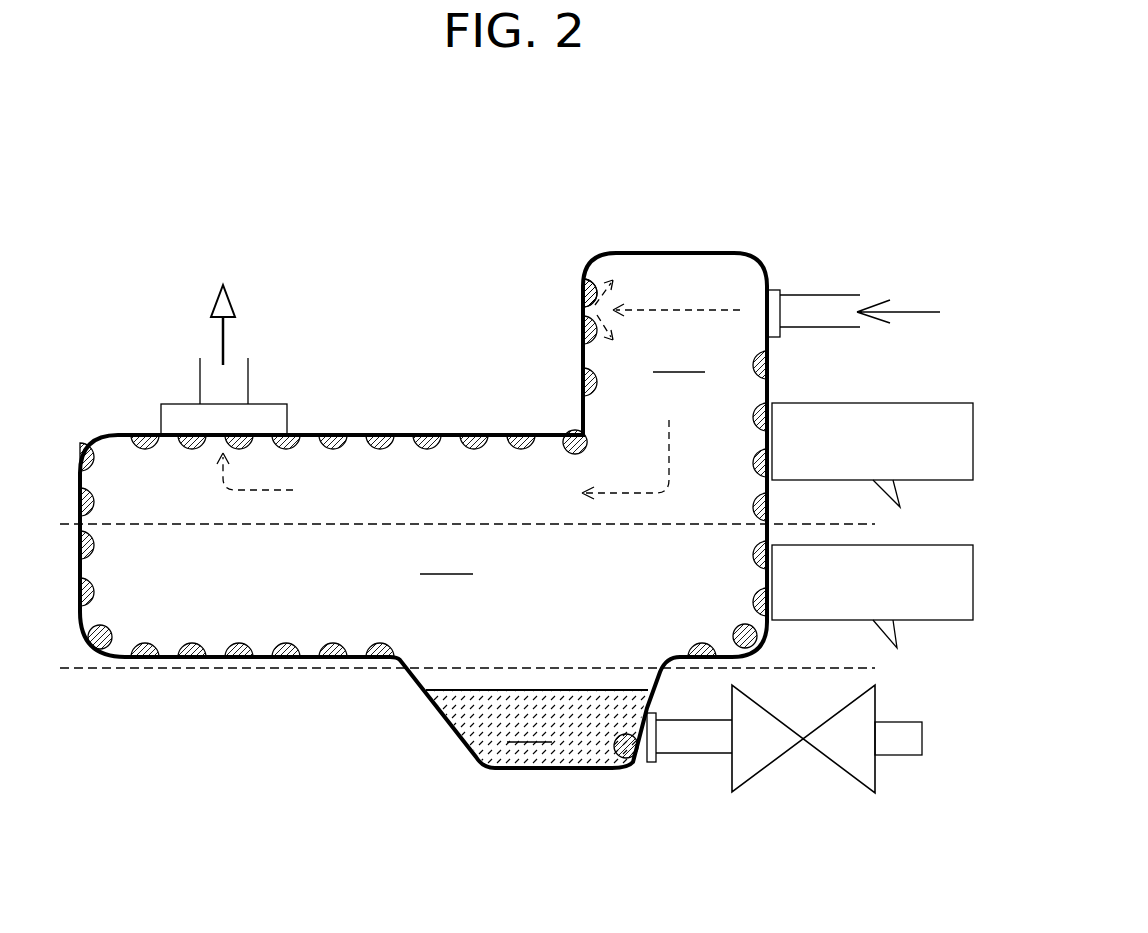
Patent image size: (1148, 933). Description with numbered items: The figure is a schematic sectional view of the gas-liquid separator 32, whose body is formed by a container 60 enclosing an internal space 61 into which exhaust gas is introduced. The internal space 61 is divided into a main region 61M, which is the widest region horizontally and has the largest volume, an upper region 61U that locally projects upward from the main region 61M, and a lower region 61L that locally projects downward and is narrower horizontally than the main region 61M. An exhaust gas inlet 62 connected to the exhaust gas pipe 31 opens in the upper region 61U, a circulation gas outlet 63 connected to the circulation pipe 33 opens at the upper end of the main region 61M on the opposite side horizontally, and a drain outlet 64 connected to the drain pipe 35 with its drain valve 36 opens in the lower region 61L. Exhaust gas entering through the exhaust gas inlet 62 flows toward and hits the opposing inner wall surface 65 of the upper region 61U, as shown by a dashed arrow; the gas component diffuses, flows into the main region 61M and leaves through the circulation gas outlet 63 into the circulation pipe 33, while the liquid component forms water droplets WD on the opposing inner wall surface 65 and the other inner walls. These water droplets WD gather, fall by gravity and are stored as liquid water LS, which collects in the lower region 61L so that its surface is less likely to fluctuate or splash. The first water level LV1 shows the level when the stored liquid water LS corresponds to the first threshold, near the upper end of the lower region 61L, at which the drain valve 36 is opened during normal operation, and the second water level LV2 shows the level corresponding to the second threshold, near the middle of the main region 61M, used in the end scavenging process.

The exhaust gas pipe 31 is at (800, 293).
The gas-liquid separator 32 is at (408, 310).
The circulation pipe 33 is at (248, 380).
The drain pipe 35 is at (687, 755).
The drain valve 36 is at (772, 764).
The container 60 is at (662, 253).
The internal space 61 is at (590, 459).
The upper region 61U is at (679, 358).
The main region 61M is at (446, 560).
The lower region 61L is at (529, 728).
The exhaust gas inlet 62 is at (763, 307).
The circulation gas outlet 63 is at (213, 443).
The drain outlet 64 is at (627, 742).
The opposing inner wall surface 65 is at (583, 282).
The water droplets WD is at (97, 540).
The liquid water LS is at (464, 724).
The first water level LV1 is at (516, 614).
The second water level LV2 is at (516, 473).